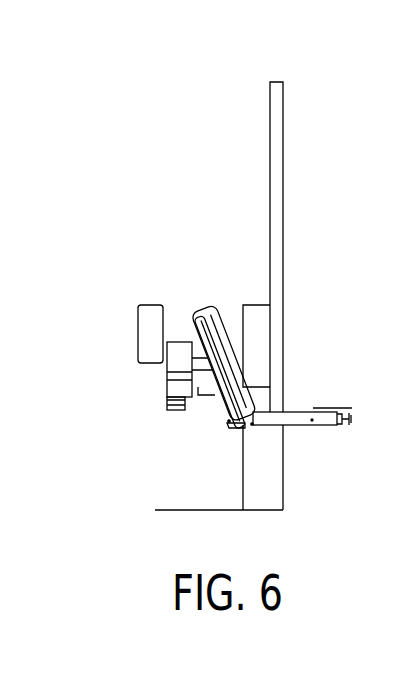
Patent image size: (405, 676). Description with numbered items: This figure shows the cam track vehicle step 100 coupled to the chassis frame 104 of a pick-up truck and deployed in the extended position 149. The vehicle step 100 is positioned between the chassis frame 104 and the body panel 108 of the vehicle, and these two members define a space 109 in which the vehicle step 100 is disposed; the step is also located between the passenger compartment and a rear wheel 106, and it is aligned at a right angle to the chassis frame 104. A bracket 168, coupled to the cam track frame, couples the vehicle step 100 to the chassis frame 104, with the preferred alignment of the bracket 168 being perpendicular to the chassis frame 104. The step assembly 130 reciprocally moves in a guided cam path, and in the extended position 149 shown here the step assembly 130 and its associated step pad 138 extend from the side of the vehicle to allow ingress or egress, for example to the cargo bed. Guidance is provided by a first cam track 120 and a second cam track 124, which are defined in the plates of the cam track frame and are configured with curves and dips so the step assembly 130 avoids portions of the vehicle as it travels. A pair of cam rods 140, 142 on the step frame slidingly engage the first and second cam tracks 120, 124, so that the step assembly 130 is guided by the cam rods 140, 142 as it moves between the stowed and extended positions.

The vehicle step 100 is at (177, 260).
The chassis frame 104 is at (150, 305).
The rear wheel 106 is at (268, 496).
The body panel 108 is at (284, 126).
The space 109 is at (219, 202).
The first cam track 120 is at (204, 303).
The second cam track 124 is at (219, 325).
The step assembly 130 is at (298, 410).
The step pad 138 is at (333, 408).
The cam rod 140 is at (226, 420).
The cam rod 142 is at (252, 426).
The extended position 149 is at (302, 465).
The bracket 168 is at (190, 412).